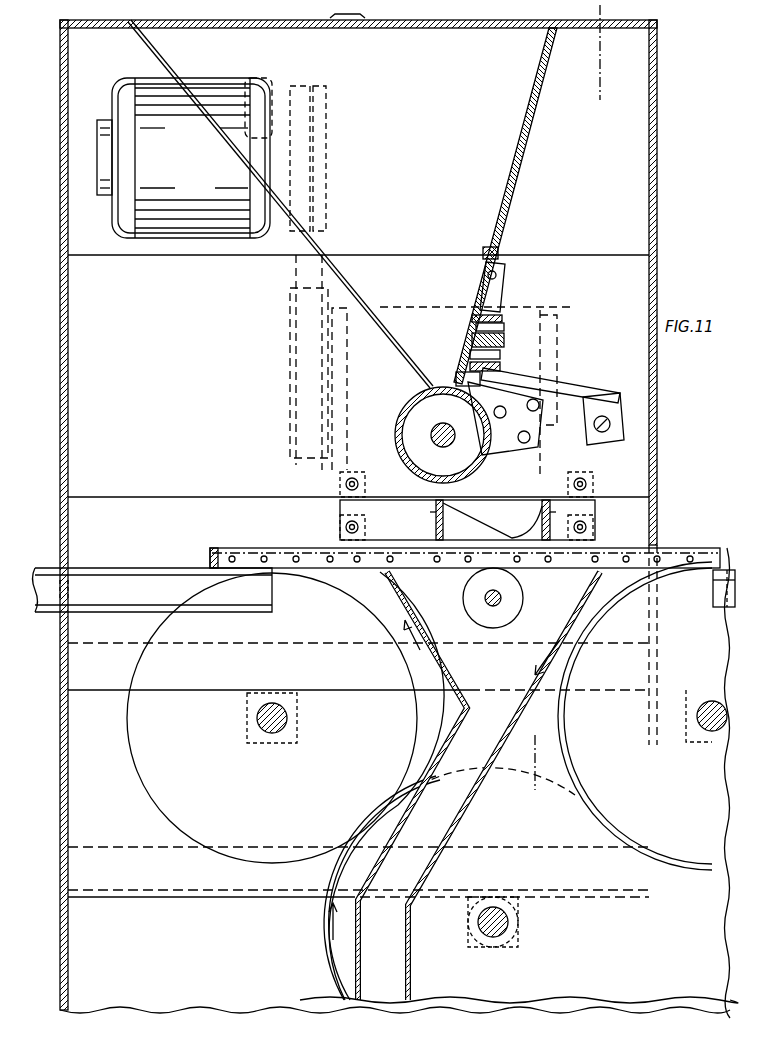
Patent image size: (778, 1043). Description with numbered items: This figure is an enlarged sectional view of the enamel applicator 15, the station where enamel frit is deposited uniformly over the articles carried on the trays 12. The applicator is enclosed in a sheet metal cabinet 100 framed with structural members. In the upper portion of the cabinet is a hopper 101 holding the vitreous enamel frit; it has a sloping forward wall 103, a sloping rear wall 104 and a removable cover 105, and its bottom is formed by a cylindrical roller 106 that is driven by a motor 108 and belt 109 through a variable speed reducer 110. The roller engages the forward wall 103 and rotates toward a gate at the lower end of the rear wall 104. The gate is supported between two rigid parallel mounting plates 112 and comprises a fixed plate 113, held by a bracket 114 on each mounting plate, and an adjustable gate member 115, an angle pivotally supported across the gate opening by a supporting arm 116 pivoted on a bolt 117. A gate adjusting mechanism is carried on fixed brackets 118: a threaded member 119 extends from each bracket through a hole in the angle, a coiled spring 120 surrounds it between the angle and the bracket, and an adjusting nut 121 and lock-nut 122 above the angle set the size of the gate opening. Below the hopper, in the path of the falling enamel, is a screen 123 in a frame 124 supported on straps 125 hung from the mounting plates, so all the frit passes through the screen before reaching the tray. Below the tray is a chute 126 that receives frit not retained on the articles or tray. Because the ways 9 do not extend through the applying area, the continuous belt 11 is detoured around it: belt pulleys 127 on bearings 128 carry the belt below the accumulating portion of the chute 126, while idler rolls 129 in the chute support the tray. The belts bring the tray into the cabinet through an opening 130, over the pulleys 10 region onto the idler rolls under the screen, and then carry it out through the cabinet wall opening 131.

The ways 9 is at (48, 605).
The pulleys 10 is at (160, 790).
The continuous belt 11 is at (414, 758).
The trays 12 is at (602, 15).
The enamel applicator 15 is at (52, 374).
The sheet metal cabinet 100 is at (658, 135).
The hopper 101 is at (522, 66).
The sloping forward wall 103 is at (345, 260).
The sloping rear wall 104 is at (520, 110).
The removable cover 105 is at (432, 30).
The cylindrical roller 106 is at (400, 410).
The motor 108 is at (143, 77).
The belt 109 is at (295, 320).
The variable speed reducer 110 is at (556, 307).
The mounting plates 112 is at (560, 250).
The fixed plate 113 is at (485, 250).
The bracket 114 is at (498, 285).
The adjustable gate member 115 is at (456, 378).
The supporting arm 116 is at (573, 385).
The bolt 117 is at (612, 424).
The fixed brackets 118 is at (505, 447).
The threaded member 119 is at (475, 315).
The coiled spring 120 is at (500, 362).
The adjusting nut 121 is at (505, 340).
The lock-nut 122 is at (500, 323).
The screen 123 is at (495, 520).
The frame 124 is at (430, 537).
The straps 125 is at (340, 505).
The chute 126 is at (440, 740).
The belt pulleys 127 is at (462, 1000).
The bearings 128 is at (480, 920).
The idler rolls 129 is at (465, 615).
The opening 130 is at (660, 545).
The cabinet wall opening 131 is at (68, 545).